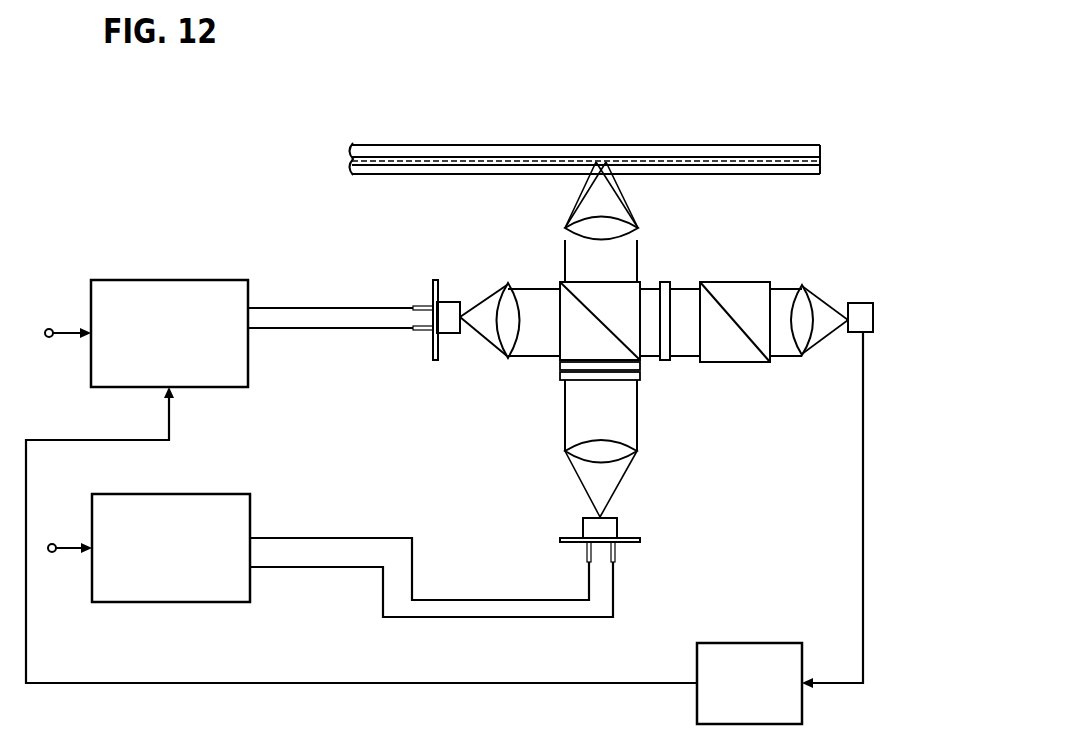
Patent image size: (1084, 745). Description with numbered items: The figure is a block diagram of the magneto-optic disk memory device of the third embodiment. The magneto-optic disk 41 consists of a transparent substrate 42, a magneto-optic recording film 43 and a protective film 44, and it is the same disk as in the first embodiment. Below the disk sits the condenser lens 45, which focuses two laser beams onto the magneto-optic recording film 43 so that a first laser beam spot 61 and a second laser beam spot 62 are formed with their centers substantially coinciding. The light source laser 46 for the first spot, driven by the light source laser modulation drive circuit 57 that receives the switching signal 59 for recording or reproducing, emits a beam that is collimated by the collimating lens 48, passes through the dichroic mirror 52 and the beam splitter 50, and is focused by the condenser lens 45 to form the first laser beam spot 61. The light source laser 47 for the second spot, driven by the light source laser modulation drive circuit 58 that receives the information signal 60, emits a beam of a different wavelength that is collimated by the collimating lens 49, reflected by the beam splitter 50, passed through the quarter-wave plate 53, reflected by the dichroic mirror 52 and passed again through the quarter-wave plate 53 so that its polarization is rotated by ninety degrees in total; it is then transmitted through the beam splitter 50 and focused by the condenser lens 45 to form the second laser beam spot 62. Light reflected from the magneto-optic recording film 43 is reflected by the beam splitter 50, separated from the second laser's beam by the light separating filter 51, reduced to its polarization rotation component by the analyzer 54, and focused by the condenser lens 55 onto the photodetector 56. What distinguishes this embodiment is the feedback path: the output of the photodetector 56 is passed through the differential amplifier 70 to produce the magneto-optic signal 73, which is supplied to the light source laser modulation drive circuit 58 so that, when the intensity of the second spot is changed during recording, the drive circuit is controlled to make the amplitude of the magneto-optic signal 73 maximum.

The magneto-optic disk 41 is at (436, 137).
The transparent substrate 42 is at (771, 176).
The magneto-optic recording film 43 is at (704, 166).
The protective film 44 is at (767, 152).
The condenser lens 45 is at (565, 228).
The light source laser for first spot 46 is at (640, 540).
The light source laser for second spot 47 is at (434, 361).
The collimating lens 48 is at (638, 452).
The collimating lens 49 is at (507, 359).
The beam splitter 50 is at (634, 352).
The light separating filter 51 is at (665, 282).
The dichroic mirror 52 is at (635, 381).
The quarter-wave plate 53 is at (568, 367).
The analyzer 54 is at (768, 282).
The condenser lens 55 is at (805, 290).
The photodetector 56 is at (860, 335).
The light source laser modulation drive circuit for first spot 57 is at (218, 494).
The light source laser modulation drive circuit for second spot 58 is at (213, 280).
The switching signal 59 is at (71, 545).
The information signal 60 is at (65, 330).
The first laser beam spot 61 is at (596, 162).
The second laser beam spot 62 is at (606, 162).
The differential amplifier 70 is at (744, 643).
The magneto-optic signal 73 is at (169, 420).